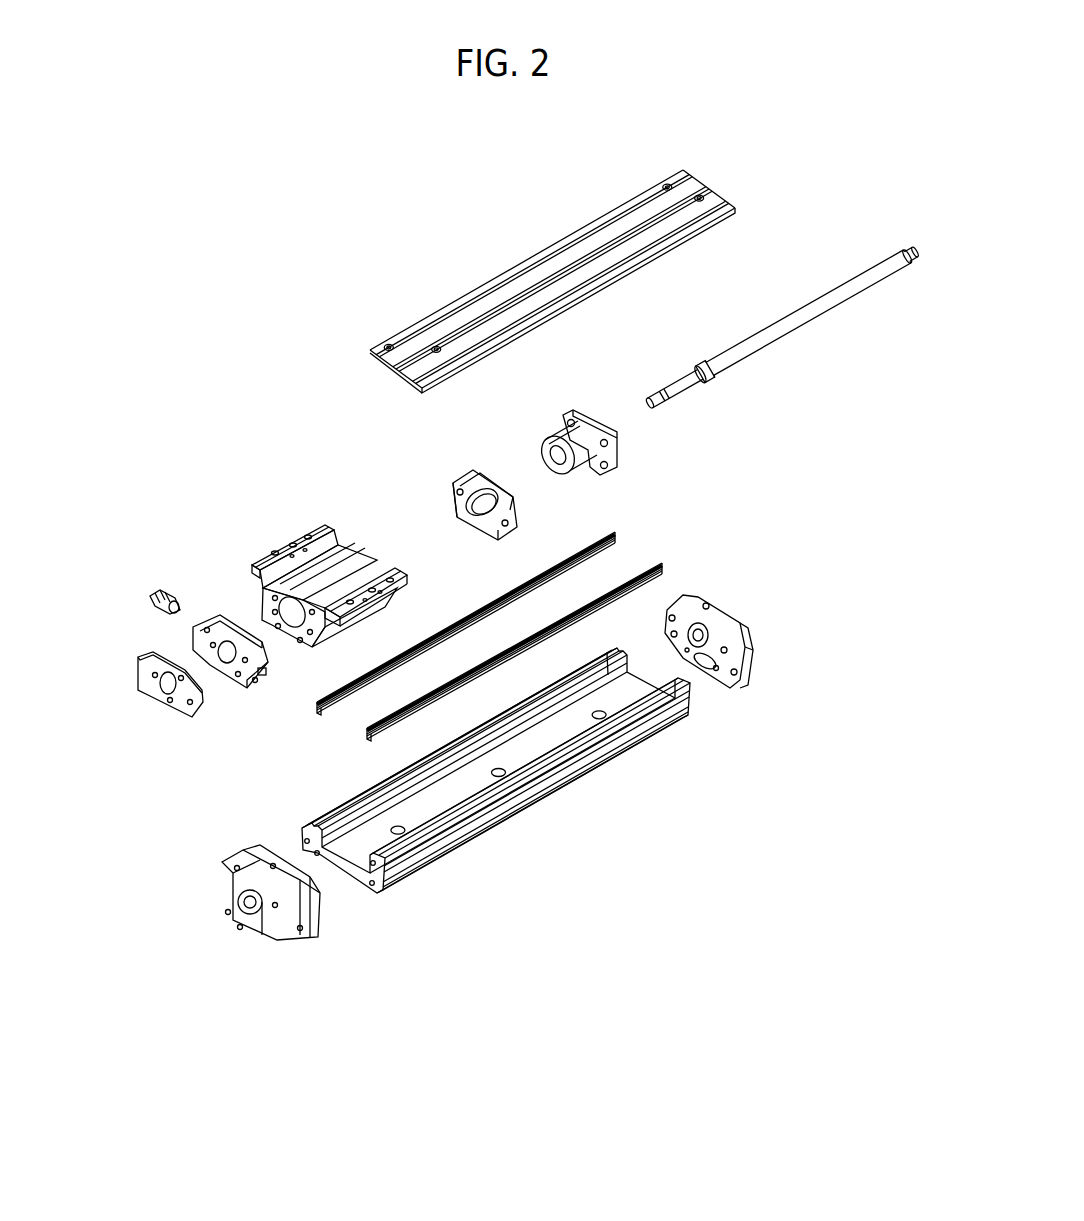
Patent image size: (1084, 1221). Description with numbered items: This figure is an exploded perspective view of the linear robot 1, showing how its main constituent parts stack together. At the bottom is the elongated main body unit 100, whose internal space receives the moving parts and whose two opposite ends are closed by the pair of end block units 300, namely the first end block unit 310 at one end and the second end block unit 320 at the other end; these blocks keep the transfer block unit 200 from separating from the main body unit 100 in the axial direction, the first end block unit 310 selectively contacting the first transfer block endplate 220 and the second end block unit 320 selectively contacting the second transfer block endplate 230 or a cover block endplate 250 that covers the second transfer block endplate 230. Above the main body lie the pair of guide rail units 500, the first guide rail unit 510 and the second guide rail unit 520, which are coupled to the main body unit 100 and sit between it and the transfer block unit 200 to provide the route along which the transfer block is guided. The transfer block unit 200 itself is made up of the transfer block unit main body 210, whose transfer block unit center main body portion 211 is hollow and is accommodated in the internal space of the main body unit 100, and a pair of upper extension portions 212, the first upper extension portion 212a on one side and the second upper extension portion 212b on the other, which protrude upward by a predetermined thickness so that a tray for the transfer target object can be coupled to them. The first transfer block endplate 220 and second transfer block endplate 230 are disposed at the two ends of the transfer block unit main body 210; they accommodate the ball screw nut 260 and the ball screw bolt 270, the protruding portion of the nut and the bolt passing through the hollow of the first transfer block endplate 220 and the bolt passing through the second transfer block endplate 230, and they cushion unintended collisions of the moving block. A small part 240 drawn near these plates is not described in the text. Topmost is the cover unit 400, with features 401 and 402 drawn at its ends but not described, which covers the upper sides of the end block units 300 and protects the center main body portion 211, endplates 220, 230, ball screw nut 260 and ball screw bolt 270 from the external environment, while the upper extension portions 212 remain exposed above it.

The linear robot 1 is at (128, 320).
The main body unit 100 is at (527, 823).
The transfer block unit 200 is at (210, 520).
The transfer block unit main body 210 is at (285, 515).
The transfer block unit center main body portion 211 is at (366, 552).
The upper extension portions 212 is at (371, 546).
The first upper extension portion 212a is at (325, 525).
The second upper extension portion 212b is at (405, 580).
The first transfer block endplate 220 is at (443, 470).
The second transfer block endplate 230 is at (240, 697).
The fitting 240 is at (140, 585).
The cover block endplate 250 is at (168, 720).
The ball screw nut 260 is at (565, 410).
The ball screw bolt 270 is at (832, 334).
The end block units 300 is at (493, 829).
The first end block unit 310 is at (738, 700).
The second end block unit 320 is at (305, 955).
The cover unit 400 is at (548, 232).
The cover mounting holes 401 is at (686, 168).
The cover mounting holes 402 is at (370, 352).
The guide rail units 500 is at (557, 611).
The first guide rail unit 510 is at (620, 532).
The second guide rail unit 520 is at (668, 565).